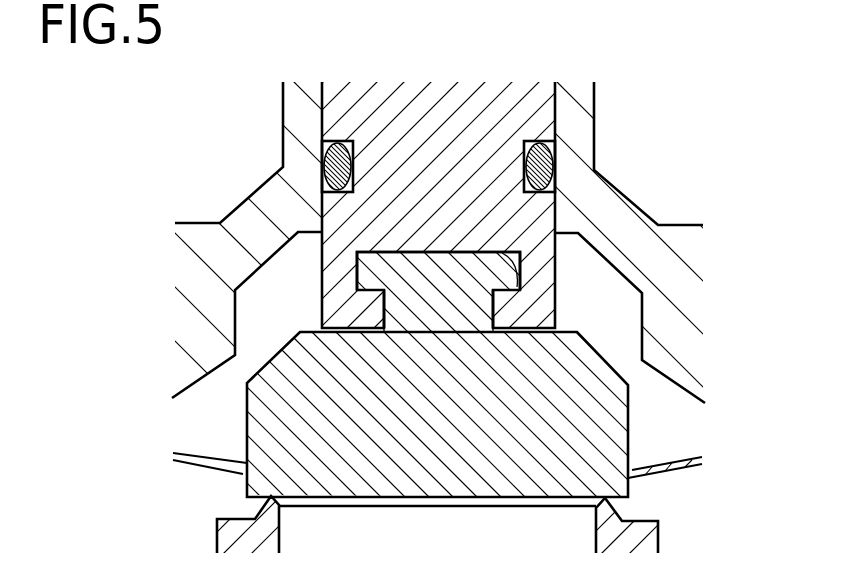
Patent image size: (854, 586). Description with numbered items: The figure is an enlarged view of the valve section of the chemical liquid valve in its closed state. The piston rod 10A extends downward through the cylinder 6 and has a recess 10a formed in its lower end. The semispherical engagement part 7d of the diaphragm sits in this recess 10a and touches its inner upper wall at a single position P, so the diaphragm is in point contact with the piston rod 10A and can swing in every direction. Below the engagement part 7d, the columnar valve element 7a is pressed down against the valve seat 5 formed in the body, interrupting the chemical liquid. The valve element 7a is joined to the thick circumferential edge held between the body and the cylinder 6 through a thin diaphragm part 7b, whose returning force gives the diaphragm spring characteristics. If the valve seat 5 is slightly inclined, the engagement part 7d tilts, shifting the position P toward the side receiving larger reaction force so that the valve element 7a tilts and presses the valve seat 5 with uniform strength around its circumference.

The piston rod 10A is at (483, 115).
The recess 10a is at (520, 288).
The position having point-contact P is at (435, 252).
The cylinder 6 is at (193, 240).
The valve element 7a is at (265, 412).
The thin diaphragm part 7b is at (203, 467).
The engagement part 7d is at (360, 272).
The valve seat 5 is at (603, 508).